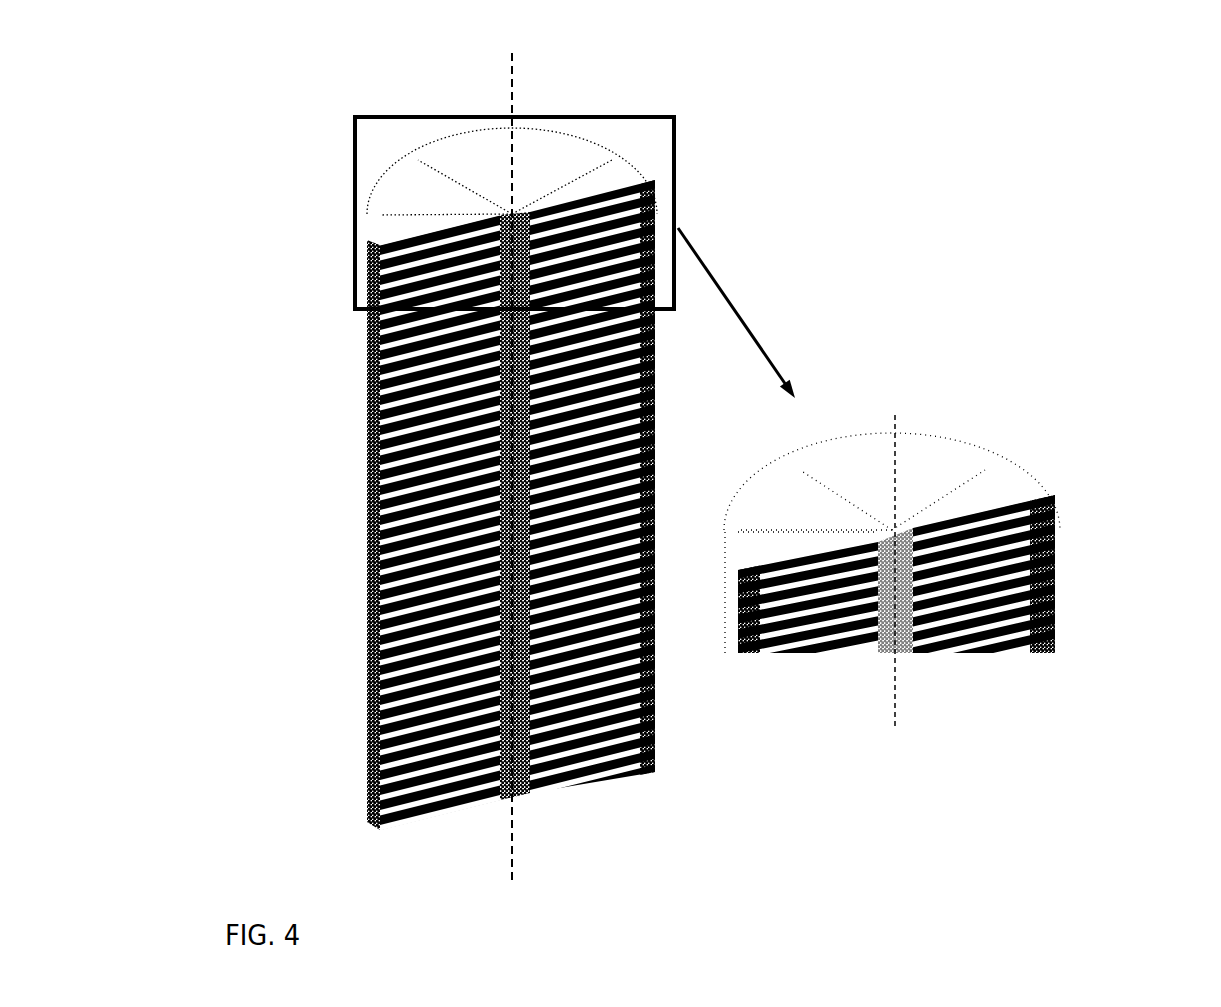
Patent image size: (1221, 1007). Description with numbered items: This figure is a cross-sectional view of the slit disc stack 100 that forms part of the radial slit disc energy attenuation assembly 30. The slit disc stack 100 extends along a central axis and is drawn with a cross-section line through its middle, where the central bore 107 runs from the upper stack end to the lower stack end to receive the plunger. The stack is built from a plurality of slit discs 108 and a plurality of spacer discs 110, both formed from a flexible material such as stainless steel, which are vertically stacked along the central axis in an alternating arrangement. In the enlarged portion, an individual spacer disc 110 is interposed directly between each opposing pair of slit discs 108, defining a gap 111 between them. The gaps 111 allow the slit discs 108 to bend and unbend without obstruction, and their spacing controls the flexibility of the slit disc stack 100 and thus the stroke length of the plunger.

The radial slit disc energy attenuation assembly 30 is at (683, 474).
The slit disc stack 100 is at (727, 510).
The central bore 107 is at (522, 210).
The slit discs 108 is at (860, 455).
The spacer discs 110 is at (1053, 500).
The gap 111 is at (1017, 555).